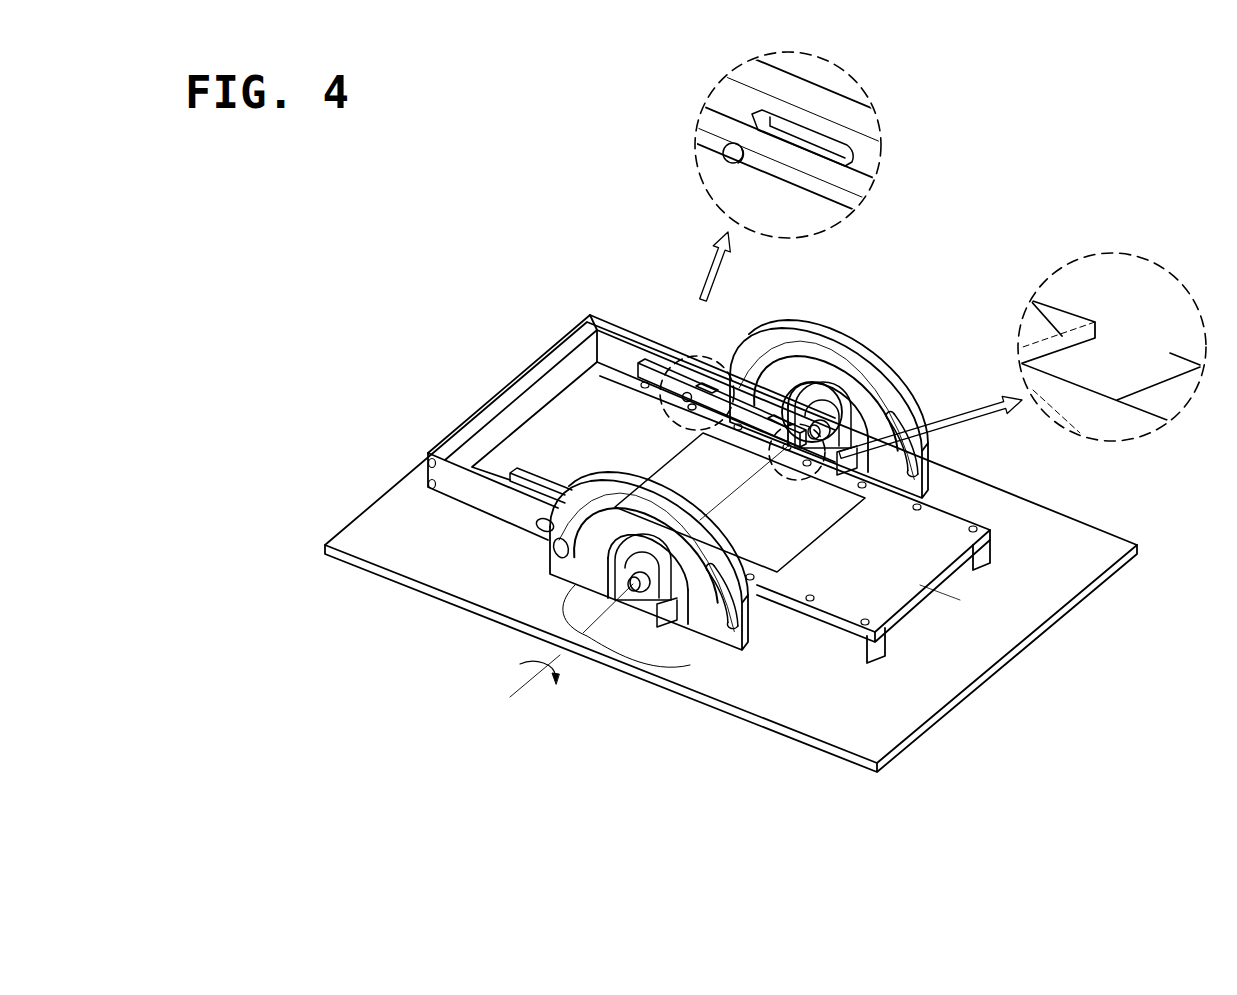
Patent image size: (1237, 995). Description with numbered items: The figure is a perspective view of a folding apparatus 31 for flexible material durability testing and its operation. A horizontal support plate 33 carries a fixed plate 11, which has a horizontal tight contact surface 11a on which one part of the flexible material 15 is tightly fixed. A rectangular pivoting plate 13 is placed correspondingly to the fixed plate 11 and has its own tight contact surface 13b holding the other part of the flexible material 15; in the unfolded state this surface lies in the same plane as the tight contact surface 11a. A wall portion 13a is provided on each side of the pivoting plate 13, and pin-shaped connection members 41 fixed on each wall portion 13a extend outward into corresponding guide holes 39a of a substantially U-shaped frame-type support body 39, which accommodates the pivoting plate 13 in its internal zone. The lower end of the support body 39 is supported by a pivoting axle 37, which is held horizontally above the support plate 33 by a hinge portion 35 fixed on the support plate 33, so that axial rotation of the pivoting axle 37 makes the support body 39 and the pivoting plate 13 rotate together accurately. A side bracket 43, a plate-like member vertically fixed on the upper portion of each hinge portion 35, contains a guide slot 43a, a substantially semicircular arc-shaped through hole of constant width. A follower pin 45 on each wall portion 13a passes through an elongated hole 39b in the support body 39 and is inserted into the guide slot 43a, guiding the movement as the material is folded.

The fixed plate 11 is at (985, 520).
The tight contact surface 11a is at (915, 585).
The pivoting plate 13 is at (567, 425).
The wall portion 13a is at (707, 118).
The tight contact surface 13b is at (542, 470).
The flexible material 15 is at (800, 565).
The folding apparatus 31 is at (447, 332).
The support plate 33 is at (910, 727).
The hinge portion 35 is at (845, 418).
The pivoting axle 37 is at (563, 632).
The support body 39 is at (442, 472).
The guide hole 39a is at (800, 127).
The elongated hole 39b is at (540, 522).
The connection member 41 is at (727, 155).
The side bracket 43 is at (905, 357).
The guide slot 43a is at (766, 352).
The follower pin 45 is at (535, 552).